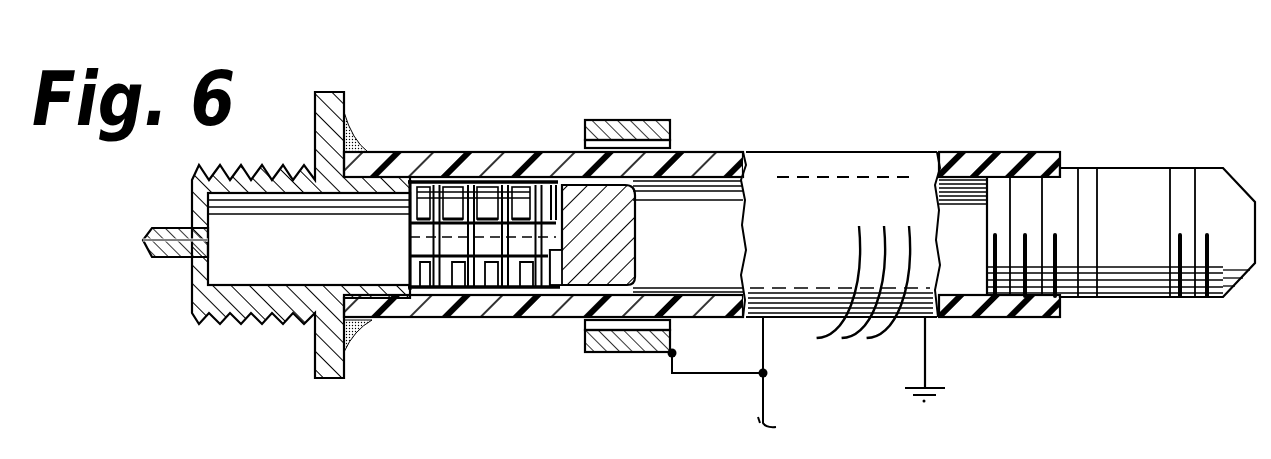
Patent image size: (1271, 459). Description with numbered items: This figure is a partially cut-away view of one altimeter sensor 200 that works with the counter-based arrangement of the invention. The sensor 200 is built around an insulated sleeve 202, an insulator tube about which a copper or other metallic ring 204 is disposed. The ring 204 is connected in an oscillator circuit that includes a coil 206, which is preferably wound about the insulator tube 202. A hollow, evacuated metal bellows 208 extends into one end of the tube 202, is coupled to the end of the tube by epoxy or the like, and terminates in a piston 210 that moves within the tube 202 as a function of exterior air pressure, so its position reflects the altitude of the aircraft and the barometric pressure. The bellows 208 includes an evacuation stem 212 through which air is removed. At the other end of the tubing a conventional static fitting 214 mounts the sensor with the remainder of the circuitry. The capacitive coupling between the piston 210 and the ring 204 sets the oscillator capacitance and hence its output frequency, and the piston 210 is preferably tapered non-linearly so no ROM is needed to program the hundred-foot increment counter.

The sensor 200 is at (592, 94).
The insulated sleeve 202 is at (418, 312).
The metallic ring 204 is at (672, 135).
The coil 206 is at (897, 122).
The bellows 208 is at (477, 182).
The piston 210 is at (620, 260).
The evacuation stem 212 is at (143, 238).
The static fitting 214 is at (1123, 288).